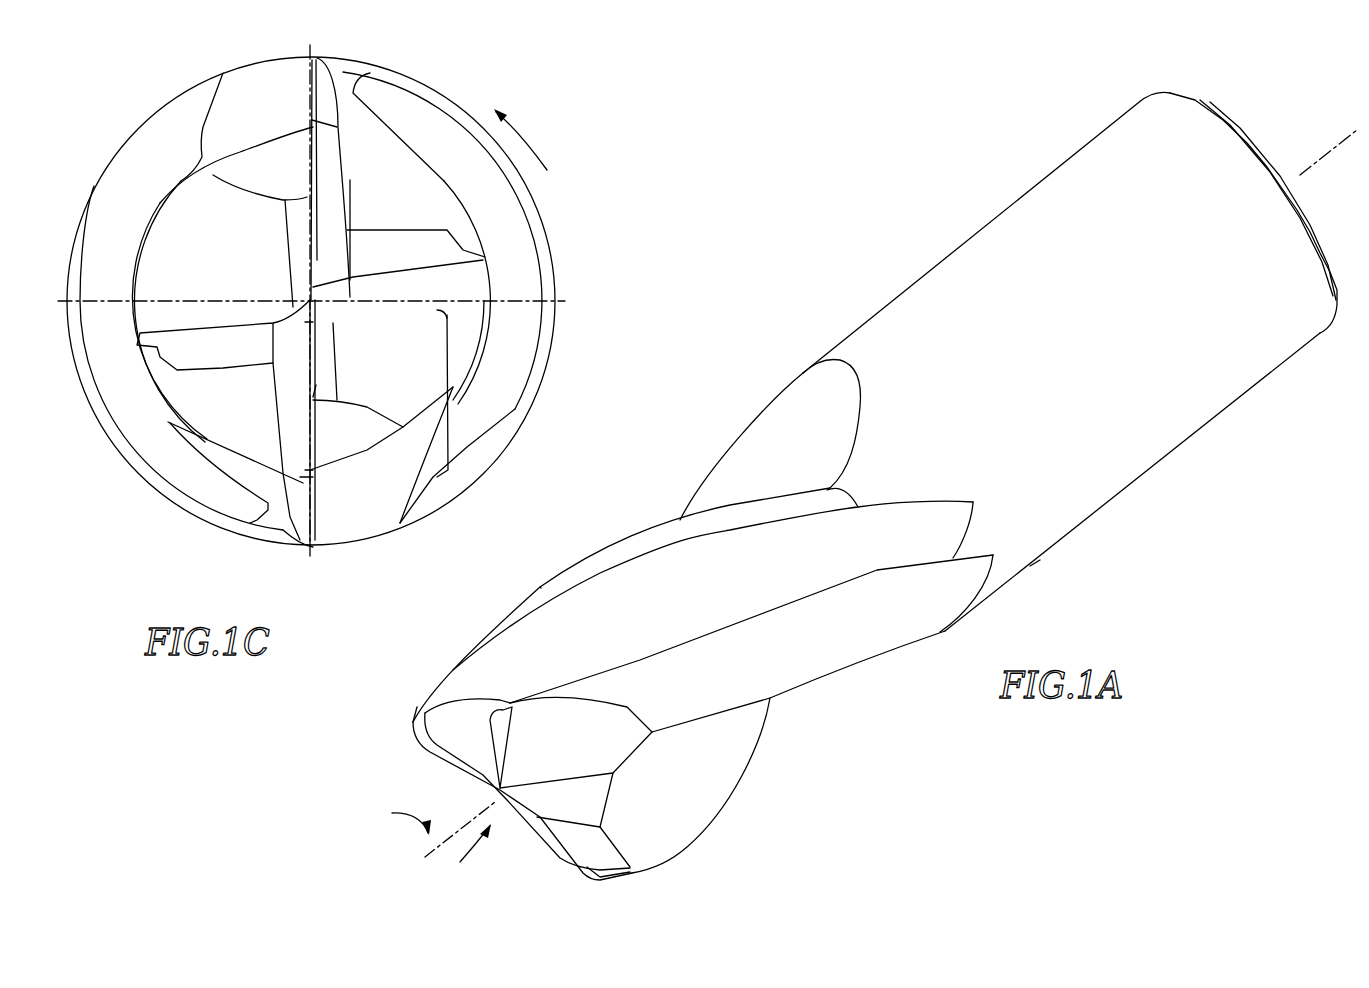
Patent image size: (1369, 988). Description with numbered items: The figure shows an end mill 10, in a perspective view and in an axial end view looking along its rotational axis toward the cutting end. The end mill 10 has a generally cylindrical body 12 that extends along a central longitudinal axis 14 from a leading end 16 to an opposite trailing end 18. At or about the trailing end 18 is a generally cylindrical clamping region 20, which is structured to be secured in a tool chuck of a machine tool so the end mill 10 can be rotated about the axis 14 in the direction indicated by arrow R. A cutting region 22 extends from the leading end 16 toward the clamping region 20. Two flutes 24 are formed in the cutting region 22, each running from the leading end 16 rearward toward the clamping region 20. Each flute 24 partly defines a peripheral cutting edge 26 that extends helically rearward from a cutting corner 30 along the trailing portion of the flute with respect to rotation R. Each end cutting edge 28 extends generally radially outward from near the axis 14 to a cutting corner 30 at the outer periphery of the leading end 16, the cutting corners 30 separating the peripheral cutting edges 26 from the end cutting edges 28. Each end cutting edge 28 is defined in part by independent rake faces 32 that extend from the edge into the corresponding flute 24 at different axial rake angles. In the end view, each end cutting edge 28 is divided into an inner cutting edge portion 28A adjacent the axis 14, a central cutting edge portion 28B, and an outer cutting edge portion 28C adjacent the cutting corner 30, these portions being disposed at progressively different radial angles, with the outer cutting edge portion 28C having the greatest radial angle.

In FIG. 1C, the end mill 10 is at (585, 202).
In FIG. 1A, the end mill 10 is at (867, 250).
In FIG. 1A, the body 12 is at (1010, 559).
In FIG. 1C, the central longitudinal axis 14 is at (310, 298).
In FIG. 1A, the central longitudinal axis 14 is at (473, 817).
In FIG. 1A, the leading end 16 is at (460, 862).
In FIG. 1A, the trailing end 18 is at (1295, 156).
In FIG. 1A, the clamping region 20 is at (1058, 146).
In FIG. 1A, the cutting region 22 is at (789, 775).
In FIG. 1C, the flute 24 is at (268, 139).
In FIG. 1A, the flute 24 is at (680, 492).
In FIG. 1A, the peripheral cutting edge 26 is at (588, 560).
In FIG. 1C, the end cutting edge 28 is at (312, 158).
In FIG. 1A, the end cutting edge 28 is at (447, 760).
In FIG. 1C, the inner cutting edge portion 28A is at (313, 332).
In FIG. 1C, the central cutting edge portion 28B is at (313, 397).
In FIG. 1C, the outer cutting edge portion 28C is at (311, 470).
In FIG. 1C, the cutting corner 30 is at (313, 62).
In FIG. 1A, the cutting corner 30 is at (413, 727).
In FIG. 1A, the rake face 32 is at (618, 803).
In FIG. 1C, the direction of rotation R is at (518, 130).
In FIG. 1A, the direction of rotation R is at (400, 816).